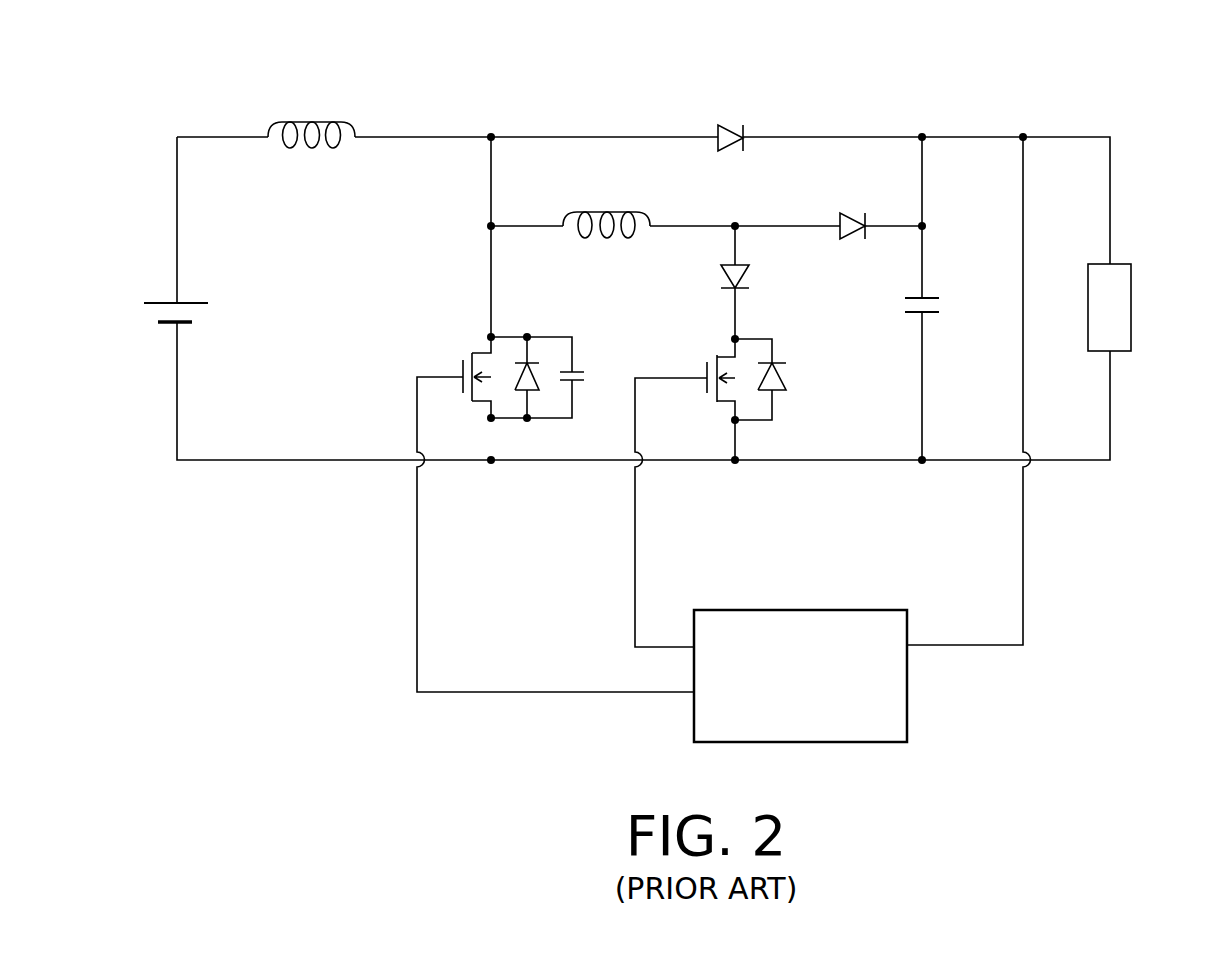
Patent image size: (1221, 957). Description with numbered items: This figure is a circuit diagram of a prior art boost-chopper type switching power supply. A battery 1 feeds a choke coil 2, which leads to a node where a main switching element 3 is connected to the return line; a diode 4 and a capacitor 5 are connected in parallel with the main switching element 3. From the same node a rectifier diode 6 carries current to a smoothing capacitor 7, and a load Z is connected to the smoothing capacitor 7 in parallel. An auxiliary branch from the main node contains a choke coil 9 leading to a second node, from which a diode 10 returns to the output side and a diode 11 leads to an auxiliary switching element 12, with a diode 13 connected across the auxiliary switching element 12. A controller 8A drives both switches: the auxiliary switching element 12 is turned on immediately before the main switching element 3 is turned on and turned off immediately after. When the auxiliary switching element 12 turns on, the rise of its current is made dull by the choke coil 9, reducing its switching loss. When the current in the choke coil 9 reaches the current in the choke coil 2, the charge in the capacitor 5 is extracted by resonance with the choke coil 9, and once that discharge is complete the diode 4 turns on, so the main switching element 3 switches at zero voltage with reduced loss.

The battery 1 is at (157, 300).
The choke coil 2 is at (313, 120).
The main switching element 3 is at (470, 350).
The diode 4 is at (520, 393).
The capacitor 5 is at (565, 383).
The rectifier diode 6 is at (733, 122).
The smoothing capacitor 7 is at (930, 296).
The controller 8A is at (800, 608).
The choke coil 9 is at (608, 210).
The diode 10 is at (850, 210).
The diode 11 is at (750, 277).
The auxiliary switching element 12 is at (710, 355).
The diode 13 is at (766, 395).
The load Z is at (1131, 305).